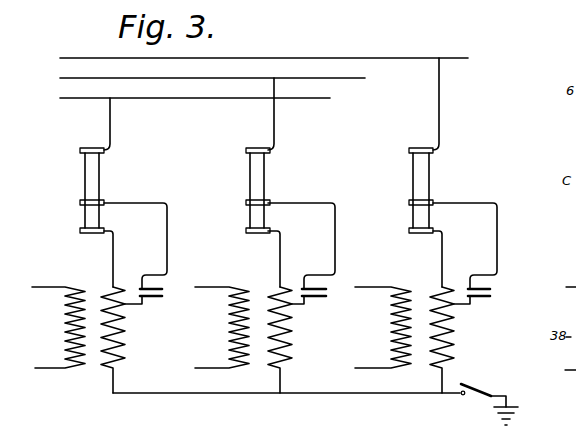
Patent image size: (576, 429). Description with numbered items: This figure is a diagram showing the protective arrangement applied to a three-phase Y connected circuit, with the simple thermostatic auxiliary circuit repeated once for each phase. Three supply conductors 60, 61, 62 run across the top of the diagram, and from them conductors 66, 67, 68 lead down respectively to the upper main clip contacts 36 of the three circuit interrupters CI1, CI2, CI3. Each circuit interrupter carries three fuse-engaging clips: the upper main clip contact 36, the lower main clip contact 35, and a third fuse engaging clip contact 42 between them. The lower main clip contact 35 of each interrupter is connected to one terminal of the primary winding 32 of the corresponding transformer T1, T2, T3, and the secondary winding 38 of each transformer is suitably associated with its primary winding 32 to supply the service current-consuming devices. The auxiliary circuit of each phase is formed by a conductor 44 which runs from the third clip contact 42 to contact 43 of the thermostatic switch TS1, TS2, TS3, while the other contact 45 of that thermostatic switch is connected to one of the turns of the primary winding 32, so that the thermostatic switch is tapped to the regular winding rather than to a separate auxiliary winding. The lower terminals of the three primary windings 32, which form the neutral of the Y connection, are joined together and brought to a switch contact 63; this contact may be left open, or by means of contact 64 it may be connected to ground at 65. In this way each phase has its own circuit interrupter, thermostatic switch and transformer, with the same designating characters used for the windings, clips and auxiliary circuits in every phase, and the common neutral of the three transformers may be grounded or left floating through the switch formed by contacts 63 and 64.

The supply conductor 62 is at (257, 58).
The supply conductor 61 is at (212, 79).
The supply conductor 60 is at (220, 99).
The conductor 66 is at (111, 130).
The conductor 67 is at (275, 132).
The conductor 68 is at (440, 124).
The main clip contact 36 is at (82, 147).
The third fuse engaging clip contact 42 is at (103, 202).
The main clip contact 35 is at (82, 235).
The conductor 44 is at (167, 238).
The contact of the thermostatic switch 43 is at (163, 290).
The contact of the thermostatic switch 45 is at (160, 300).
The primary winding 32 is at (125, 333).
The secondary winding 38 is at (66, 333).
The switch contact 63 is at (466, 396).
The contact 64 is at (475, 386).
The ground 65 is at (508, 403).
The circuit interrupter CI1 is at (85, 177).
The circuit interrupter CI2 is at (250, 177).
The circuit interrupter CI3 is at (413, 177).
The thermostatic switch TS1 is at (163, 297).
The thermostatic switch TS2 is at (326, 297).
The thermostatic switch TS3 is at (490, 297).
The transformer T1 is at (97, 373).
The transformer T2 is at (255, 368).
The transformer T3 is at (412, 370).